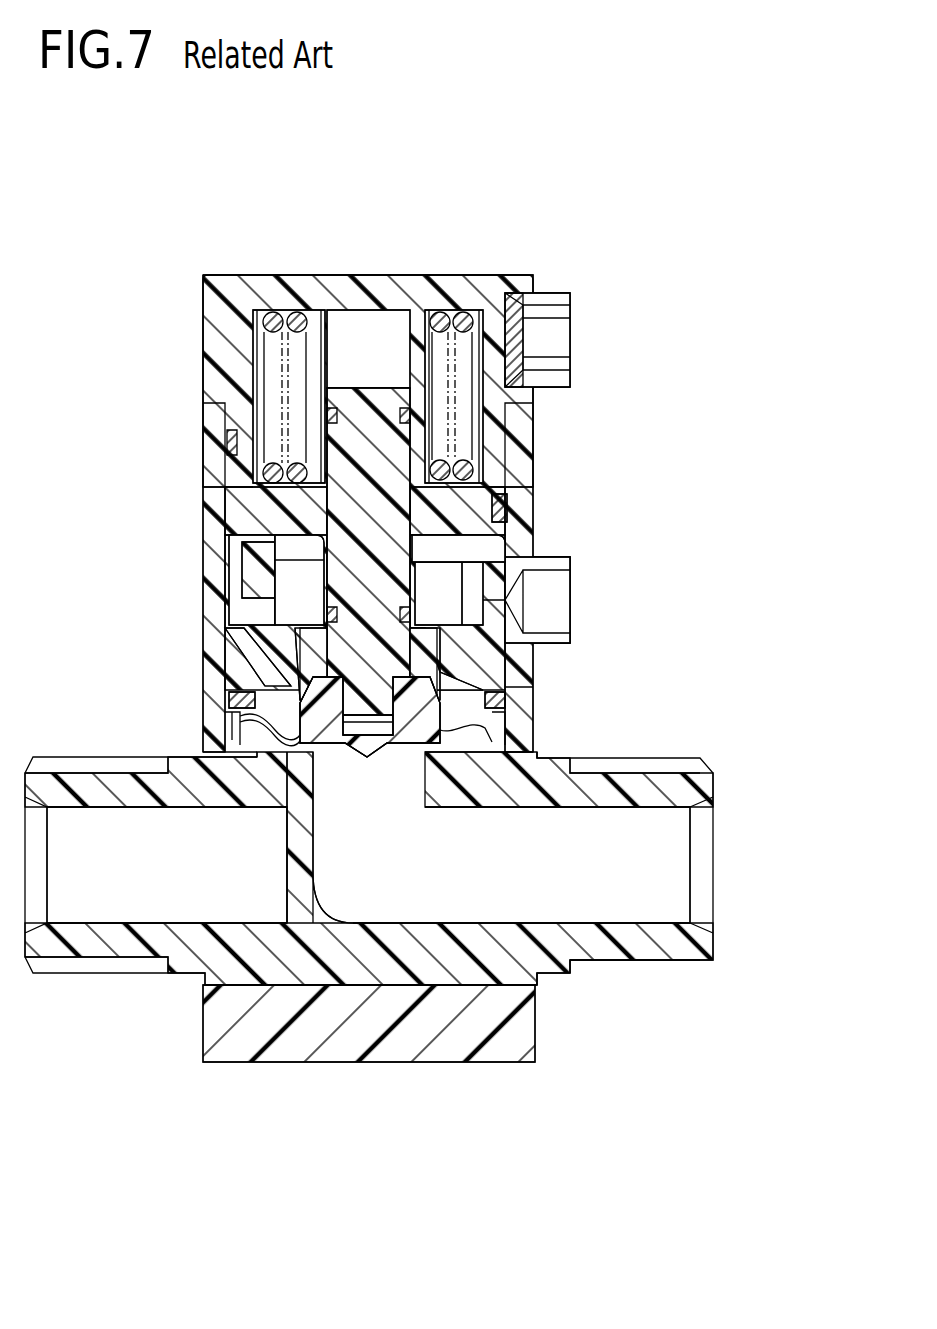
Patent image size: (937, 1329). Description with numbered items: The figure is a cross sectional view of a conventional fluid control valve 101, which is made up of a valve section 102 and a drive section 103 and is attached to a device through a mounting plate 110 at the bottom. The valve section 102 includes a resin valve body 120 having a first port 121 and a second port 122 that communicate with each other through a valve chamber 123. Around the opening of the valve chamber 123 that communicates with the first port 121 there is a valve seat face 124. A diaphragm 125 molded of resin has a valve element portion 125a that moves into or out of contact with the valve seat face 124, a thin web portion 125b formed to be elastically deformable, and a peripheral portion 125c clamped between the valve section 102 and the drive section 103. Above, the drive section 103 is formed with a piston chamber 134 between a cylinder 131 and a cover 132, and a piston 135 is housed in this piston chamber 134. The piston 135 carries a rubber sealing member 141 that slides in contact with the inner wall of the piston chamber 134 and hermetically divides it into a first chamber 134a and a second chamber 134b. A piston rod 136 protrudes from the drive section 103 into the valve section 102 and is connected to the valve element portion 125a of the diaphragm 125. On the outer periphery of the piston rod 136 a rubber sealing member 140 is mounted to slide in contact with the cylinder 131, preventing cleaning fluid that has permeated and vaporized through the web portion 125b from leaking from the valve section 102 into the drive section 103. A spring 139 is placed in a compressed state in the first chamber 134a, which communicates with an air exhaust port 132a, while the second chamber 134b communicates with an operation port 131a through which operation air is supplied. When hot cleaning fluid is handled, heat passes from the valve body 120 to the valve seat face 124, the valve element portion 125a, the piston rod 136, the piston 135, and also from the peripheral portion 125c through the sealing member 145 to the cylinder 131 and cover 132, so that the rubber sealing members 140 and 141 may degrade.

The fluid control valve 101 is at (652, 216).
The valve section 102 is at (770, 1062).
The drive section 103 is at (770, 265).
The mounting plate 110 is at (400, 1050).
The valve body 120 is at (192, 963).
The first port 121 is at (660, 895).
The second port 122 is at (62, 890).
The valve chamber 123 is at (470, 738).
The valve seat face 124 is at (465, 755).
The diaphragm 125 is at (106, 665).
The valve element portion 125a is at (242, 742).
The web portion 125b is at (255, 728).
The peripheral portion 125c is at (235, 698).
The cylinder 131 is at (215, 428).
The operation port 131a is at (546, 602).
The cover 132 is at (218, 343).
The air exhaust port 132a is at (571, 346).
The piston chamber 134 is at (76, 487).
The first chamber 134a is at (232, 468).
The second chamber 134b is at (240, 582).
The piston 135 is at (478, 492).
The piston rod 136 is at (397, 652).
The spring 139 is at (273, 316).
The sealing member 140 is at (312, 632).
The sealing member 141 is at (515, 513).
The sealing member 145 is at (505, 702).